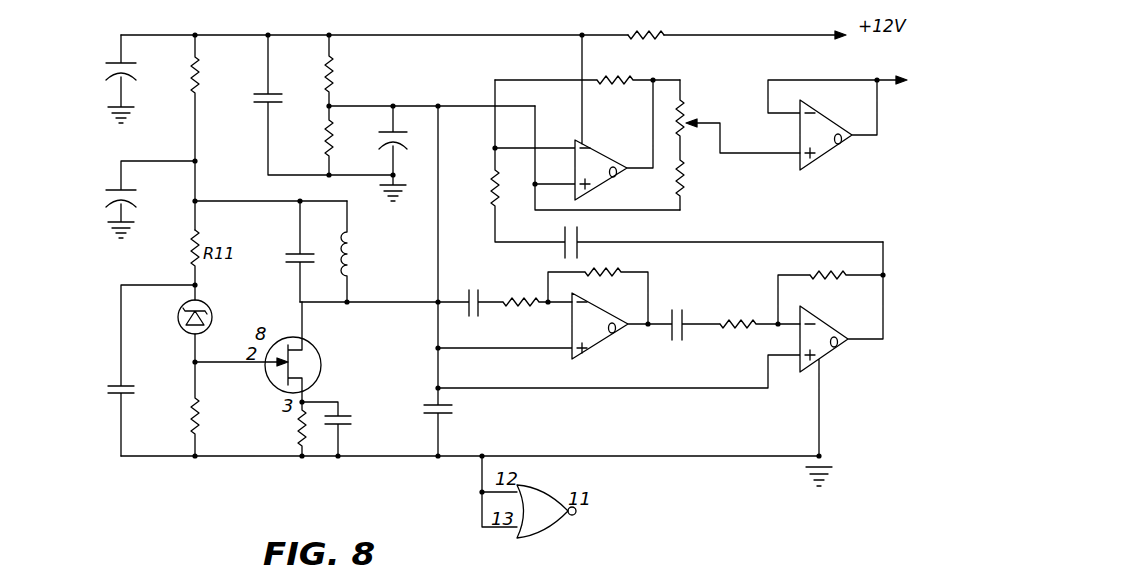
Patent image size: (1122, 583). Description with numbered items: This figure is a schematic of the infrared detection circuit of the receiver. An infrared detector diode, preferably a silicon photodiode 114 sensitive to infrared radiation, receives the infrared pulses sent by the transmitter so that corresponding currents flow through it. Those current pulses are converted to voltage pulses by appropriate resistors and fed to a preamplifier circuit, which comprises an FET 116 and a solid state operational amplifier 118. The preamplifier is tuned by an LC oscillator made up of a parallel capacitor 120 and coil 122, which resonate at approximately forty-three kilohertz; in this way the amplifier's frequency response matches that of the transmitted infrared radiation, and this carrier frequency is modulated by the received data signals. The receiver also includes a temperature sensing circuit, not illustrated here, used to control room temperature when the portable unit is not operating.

The silicon photodiode 114 is at (213, 317).
The FET 116 is at (321, 356).
The solid state operational amplifier 118 is at (599, 152).
The capacitor 120 is at (295, 251).
The coil 122 is at (350, 252).